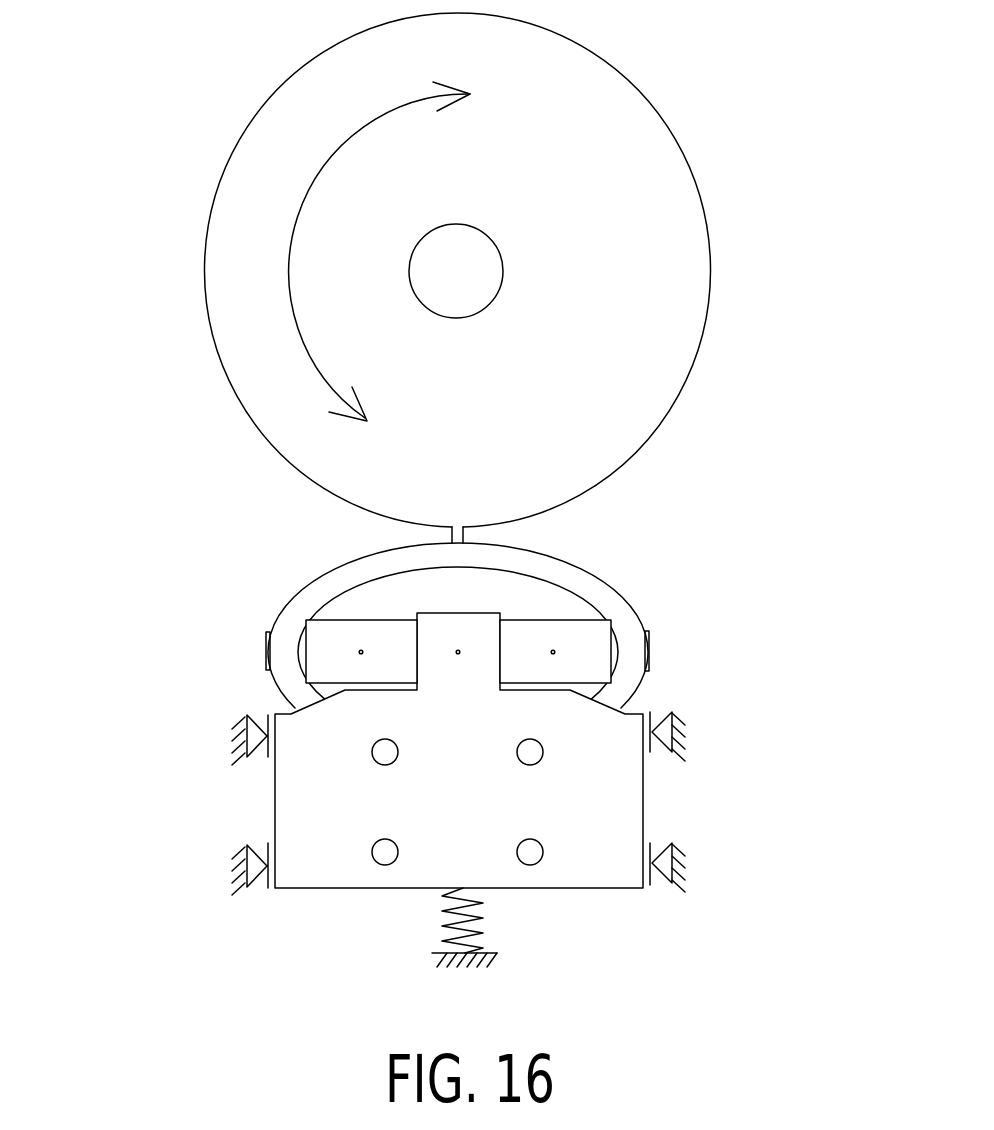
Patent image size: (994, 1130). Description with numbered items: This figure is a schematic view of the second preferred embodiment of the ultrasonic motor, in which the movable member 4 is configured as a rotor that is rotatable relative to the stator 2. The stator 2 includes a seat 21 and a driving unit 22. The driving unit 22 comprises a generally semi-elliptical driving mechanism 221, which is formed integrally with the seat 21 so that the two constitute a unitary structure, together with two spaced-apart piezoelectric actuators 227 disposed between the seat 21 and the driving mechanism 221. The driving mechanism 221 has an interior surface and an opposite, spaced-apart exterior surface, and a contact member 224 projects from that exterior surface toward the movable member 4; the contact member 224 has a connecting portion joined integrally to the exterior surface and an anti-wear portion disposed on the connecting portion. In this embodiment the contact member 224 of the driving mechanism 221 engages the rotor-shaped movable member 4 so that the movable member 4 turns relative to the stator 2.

The movable member 4 is at (670, 130).
The stator 2 is at (127, 623).
The driving unit 22 is at (252, 642).
The driving mechanism 221 is at (615, 582).
The contact member 224 is at (459, 526).
The piezoelectric actuators 227 is at (362, 618).
The seat 21 is at (246, 802).